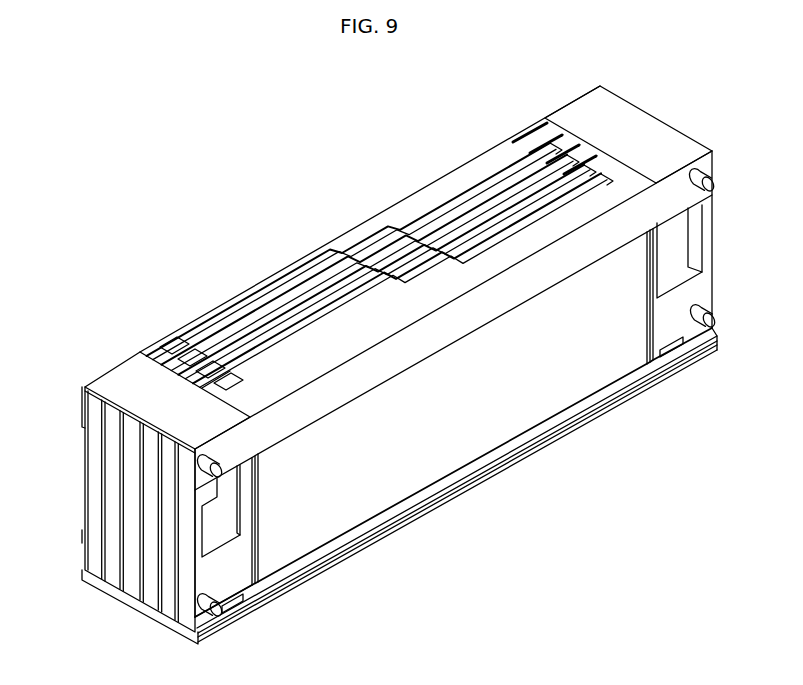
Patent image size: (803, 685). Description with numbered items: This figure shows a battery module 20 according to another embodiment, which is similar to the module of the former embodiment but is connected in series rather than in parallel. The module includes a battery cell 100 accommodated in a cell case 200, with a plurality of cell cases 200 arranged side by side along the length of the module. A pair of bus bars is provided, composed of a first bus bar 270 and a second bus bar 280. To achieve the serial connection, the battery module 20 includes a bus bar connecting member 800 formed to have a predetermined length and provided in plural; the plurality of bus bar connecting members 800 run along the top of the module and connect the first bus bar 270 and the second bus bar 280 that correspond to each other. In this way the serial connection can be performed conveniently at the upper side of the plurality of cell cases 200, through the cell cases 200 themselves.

The battery module 20 is at (281, 169).
The battery cell 100 is at (477, 426).
The cell case 200 is at (112, 487).
The first bus bar 270 is at (160, 352).
The second bus bar 280 is at (530, 138).
The bus bar connecting member 800 is at (283, 280).